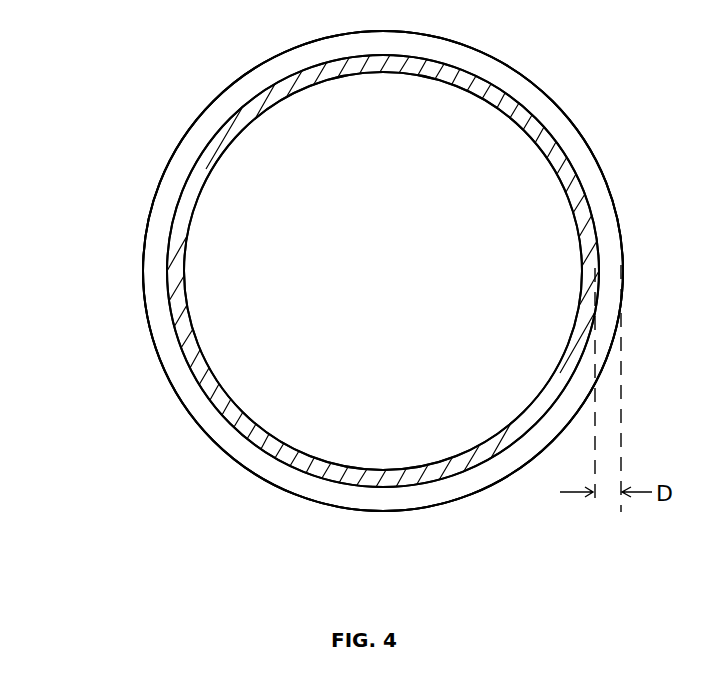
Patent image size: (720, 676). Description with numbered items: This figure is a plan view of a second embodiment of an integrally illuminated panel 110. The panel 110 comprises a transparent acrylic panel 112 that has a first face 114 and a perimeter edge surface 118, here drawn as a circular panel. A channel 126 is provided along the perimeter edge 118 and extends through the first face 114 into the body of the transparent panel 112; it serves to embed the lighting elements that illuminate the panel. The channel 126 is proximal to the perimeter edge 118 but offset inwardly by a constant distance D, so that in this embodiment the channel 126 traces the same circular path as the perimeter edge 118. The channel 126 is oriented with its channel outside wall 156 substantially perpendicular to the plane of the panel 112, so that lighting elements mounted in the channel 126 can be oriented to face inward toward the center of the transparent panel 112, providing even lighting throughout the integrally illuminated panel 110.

The integrally illuminated panel 110 is at (100, 74).
The transparent acrylic panel 112 is at (556, 120).
The first face 114 is at (565, 265).
The perimeter edge surface 118 is at (616, 213).
The channel 126 is at (567, 176).
The channel outside wall 156 is at (580, 187).